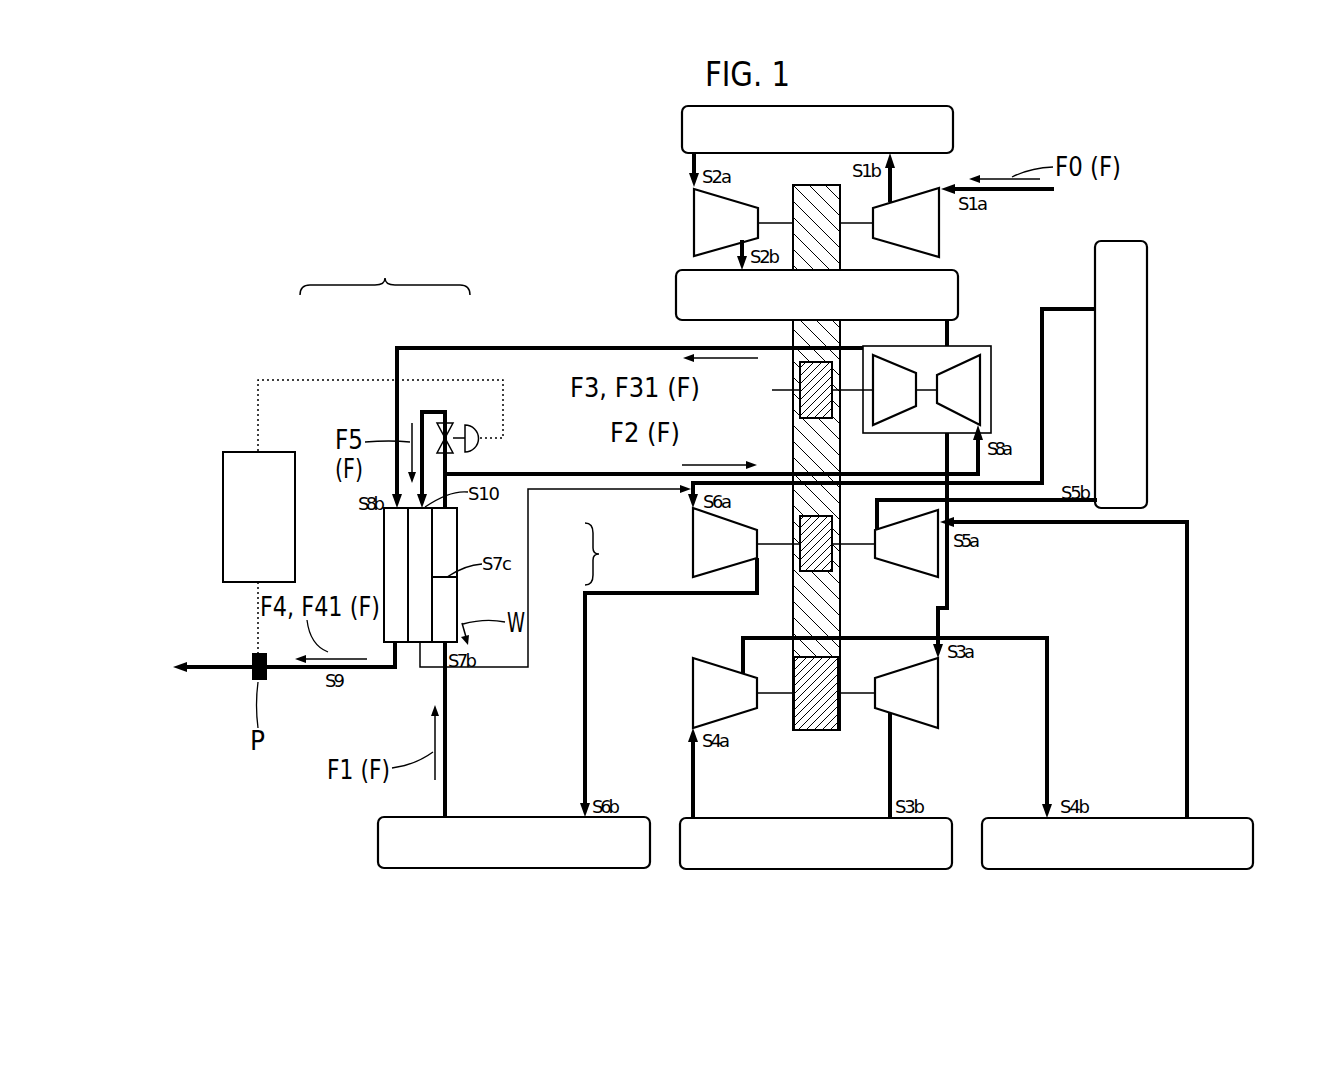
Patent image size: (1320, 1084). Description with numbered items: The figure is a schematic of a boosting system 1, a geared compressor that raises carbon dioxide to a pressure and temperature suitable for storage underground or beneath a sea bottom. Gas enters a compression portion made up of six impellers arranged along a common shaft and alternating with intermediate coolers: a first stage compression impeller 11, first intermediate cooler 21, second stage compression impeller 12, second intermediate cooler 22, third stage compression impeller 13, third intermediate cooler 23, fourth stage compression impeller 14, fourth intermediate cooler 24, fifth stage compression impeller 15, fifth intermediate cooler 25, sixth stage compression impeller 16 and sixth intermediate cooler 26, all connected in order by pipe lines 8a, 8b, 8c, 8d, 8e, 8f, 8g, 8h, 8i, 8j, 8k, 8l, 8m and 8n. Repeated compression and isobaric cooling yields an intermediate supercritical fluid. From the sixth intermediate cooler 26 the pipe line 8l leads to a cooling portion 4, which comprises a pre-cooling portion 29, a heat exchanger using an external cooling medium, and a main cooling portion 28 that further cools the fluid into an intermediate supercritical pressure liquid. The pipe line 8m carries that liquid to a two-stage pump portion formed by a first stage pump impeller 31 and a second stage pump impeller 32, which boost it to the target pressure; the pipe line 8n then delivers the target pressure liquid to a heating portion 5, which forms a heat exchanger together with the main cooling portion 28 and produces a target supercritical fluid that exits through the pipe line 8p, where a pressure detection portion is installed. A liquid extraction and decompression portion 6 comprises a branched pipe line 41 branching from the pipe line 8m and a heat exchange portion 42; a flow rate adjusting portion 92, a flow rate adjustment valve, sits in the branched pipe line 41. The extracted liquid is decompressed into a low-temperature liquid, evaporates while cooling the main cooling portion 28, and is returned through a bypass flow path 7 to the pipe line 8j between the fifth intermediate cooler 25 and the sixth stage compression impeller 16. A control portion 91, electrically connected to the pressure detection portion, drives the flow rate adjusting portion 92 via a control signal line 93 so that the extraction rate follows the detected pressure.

The boosting system 1 is at (1208, 156).
The cooling portion 4 is at (605, 554).
The heating portion 5 is at (442, 467).
The liquid extraction and decompression portion 6 is at (385, 268).
The bypass flow path 7 is at (528, 512).
The pipe line 8a is at (893, 187).
The pipe line 8b is at (692, 158).
The pipe line 8c is at (742, 243).
The pipe line 8d is at (948, 592).
The pipe line 8e is at (888, 768).
The pipe line 8f is at (695, 783).
The pipe line 8g is at (1049, 722).
The pipe line 8h is at (1189, 722).
The pipe line 8i is at (1073, 505).
The pipe line 8j is at (1042, 415).
The pipe line 8k is at (587, 697).
The pipe line 8l is at (447, 740).
The pipe line 8m is at (568, 473).
The pipe line 8n is at (500, 347).
The pipe line 8p is at (363, 670).
The first stage compression impeller 11 is at (947, 232).
The second stage compression impeller 12 is at (694, 222).
The third stage compression impeller 13 is at (940, 700).
The fourth stage compression impeller 14 is at (727, 722).
The fifth stage compression impeller 15 is at (947, 563).
The sixth stage compression impeller 16 is at (693, 545).
The first intermediate cooler 21 is at (955, 128).
The second intermediate cooler 22 is at (676, 290).
The third intermediate cooler 23 is at (813, 870).
The fourth intermediate cooler 24 is at (1117, 870).
The fifth intermediate cooler 25 is at (1148, 377).
The sixth intermediate cooler 26 is at (513, 870).
The main cooling portion 28 is at (455, 545).
The pre-cooling portion 29 is at (455, 592).
The first stage pump impeller 31 is at (960, 357).
The second stage pump impeller 32 is at (893, 421).
The branched pipe line 41 is at (421, 410).
The heat exchange portion 42 is at (413, 560).
The control portion 91 is at (223, 513).
The flow rate adjusting portion 92 is at (449, 424).
The control signal line 93 is at (258, 414).